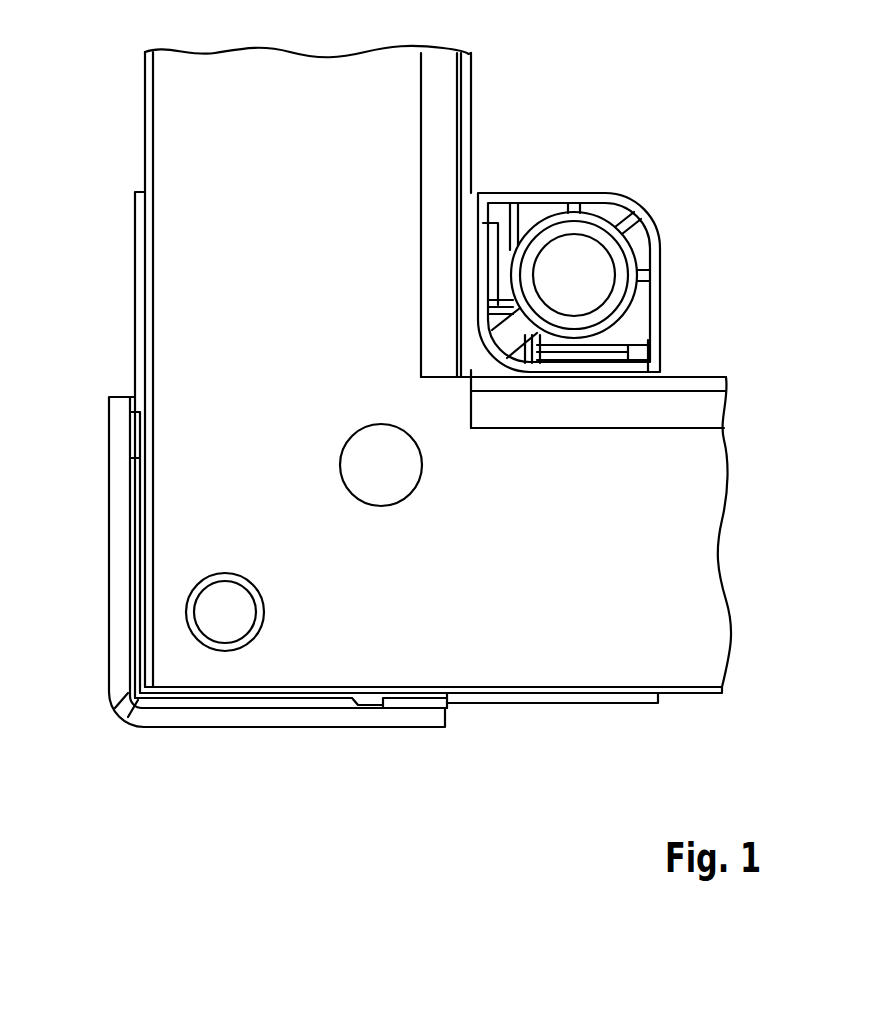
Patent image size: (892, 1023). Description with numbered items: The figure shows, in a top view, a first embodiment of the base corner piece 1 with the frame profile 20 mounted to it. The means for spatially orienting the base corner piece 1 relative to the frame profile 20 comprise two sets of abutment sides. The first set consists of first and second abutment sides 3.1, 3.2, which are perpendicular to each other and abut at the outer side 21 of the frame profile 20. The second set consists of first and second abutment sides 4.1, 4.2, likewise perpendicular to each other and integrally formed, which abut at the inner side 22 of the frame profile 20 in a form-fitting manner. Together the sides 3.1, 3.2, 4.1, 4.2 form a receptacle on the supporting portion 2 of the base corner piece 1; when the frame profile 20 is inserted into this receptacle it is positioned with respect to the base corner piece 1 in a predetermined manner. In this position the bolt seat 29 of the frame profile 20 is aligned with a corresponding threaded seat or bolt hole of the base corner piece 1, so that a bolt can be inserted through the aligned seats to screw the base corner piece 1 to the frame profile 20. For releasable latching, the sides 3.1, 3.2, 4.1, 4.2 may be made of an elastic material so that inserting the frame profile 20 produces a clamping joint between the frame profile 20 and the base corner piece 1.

The base corner piece 1 is at (647, 310).
The supporting portion 2 is at (487, 200).
The first abutment side 3.1 is at (130, 428).
The second abutment side 3.2 is at (413, 708).
The first abutment side 4.1 is at (497, 215).
The second abutment side 4.2 is at (643, 350).
The frame profile 20 is at (695, 563).
The outer side 21 is at (145, 167).
The inner side 22 is at (474, 88).
The bolt seat 29 is at (218, 643).